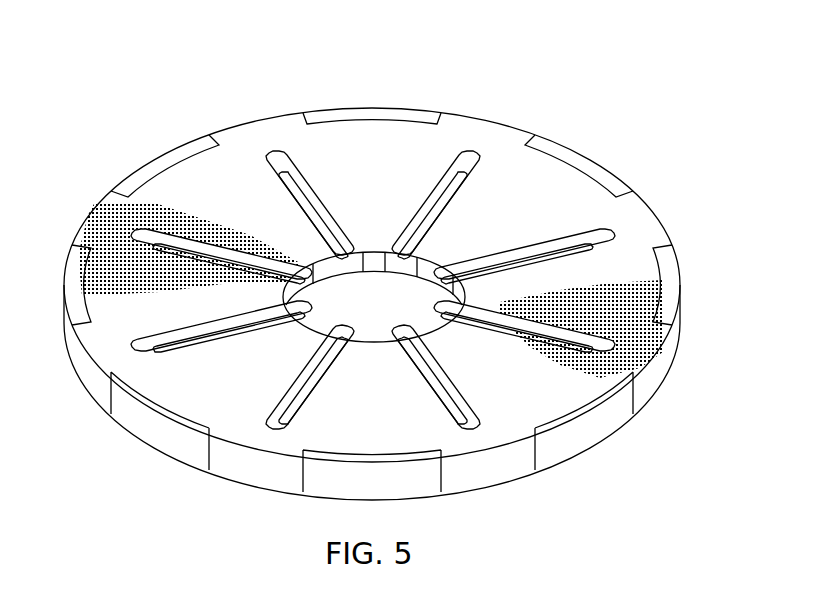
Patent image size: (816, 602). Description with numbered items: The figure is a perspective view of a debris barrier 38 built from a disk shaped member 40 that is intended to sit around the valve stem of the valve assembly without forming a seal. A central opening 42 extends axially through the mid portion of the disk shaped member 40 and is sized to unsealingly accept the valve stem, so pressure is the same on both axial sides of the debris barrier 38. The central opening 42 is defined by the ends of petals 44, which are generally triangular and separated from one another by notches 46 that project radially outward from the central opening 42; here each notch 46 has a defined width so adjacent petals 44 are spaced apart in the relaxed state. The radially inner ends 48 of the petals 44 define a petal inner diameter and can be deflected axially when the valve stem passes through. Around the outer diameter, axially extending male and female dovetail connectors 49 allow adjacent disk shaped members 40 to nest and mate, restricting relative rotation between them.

The debris barrier 38 is at (239, 76).
The disk shaped member 40 is at (630, 243).
The central opening 42 is at (405, 293).
The petals 44 is at (517, 200).
The notches 46 is at (137, 198).
The radially inner ends 48 is at (200, 152).
The dovetail connectors 49 is at (657, 370).